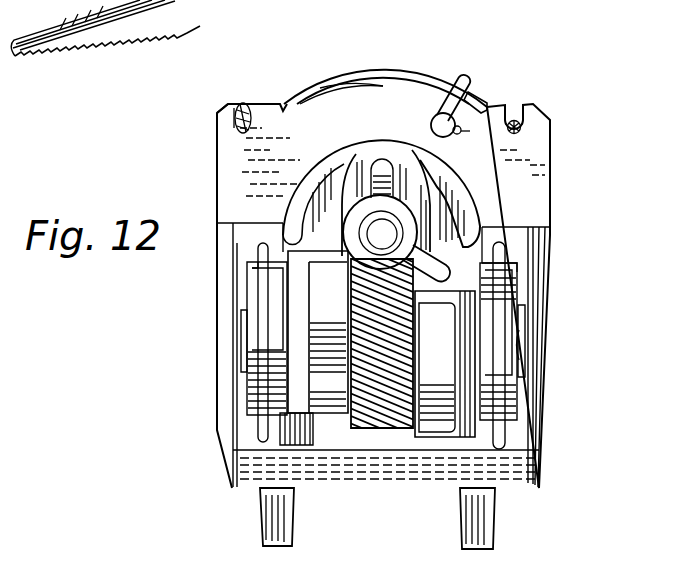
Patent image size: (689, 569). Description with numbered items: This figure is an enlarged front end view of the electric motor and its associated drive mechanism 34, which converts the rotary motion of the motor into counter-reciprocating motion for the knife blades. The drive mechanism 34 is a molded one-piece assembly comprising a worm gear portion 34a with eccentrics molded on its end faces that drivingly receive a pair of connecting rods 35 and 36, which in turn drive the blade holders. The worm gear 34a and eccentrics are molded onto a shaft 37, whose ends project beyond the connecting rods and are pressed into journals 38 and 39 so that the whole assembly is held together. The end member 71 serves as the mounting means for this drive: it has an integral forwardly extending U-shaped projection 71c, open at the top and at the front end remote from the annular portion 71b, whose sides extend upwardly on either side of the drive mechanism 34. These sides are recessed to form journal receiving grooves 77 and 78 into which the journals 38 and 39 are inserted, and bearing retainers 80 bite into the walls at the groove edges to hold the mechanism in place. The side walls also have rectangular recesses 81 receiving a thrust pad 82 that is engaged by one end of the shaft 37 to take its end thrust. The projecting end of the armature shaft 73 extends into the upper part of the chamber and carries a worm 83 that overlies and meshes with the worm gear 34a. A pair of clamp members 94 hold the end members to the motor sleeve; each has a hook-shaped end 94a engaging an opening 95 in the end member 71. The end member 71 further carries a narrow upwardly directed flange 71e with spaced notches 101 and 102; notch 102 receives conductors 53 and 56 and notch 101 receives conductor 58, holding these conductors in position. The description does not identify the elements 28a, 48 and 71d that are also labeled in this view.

The blade 28a is at (206, 28).
The housing 48 is at (240, 152).
The conductor 53 is at (243, 103).
The conductor 56 is at (236, 126).
The conductor 58 is at (524, 130).
The end member 71 is at (404, 74).
The annular portion 71b is at (303, 212).
The U-shaped projection 71c is at (528, 233).
The arm foot 71d is at (266, 502).
The flange 71e is at (226, 106).
The armature shaft 73 is at (374, 226).
The journal receiving groove 77 is at (254, 266).
The journal receiving groove 78 is at (511, 273).
The bearing retainer 80 is at (248, 392).
The rectangular recess 81 is at (246, 337).
The thrust pad 82 is at (523, 336).
The worm 83 is at (397, 221).
The clamp member 94 is at (453, 80).
The hook-shaped end 94a is at (486, 100).
The opening 95 is at (468, 130).
The notch 101 is at (515, 110).
The notch 102 is at (297, 98).
The drive mechanism 34 is at (258, 275).
The worm gear portion 34a is at (384, 430).
The connecting rod 35 is at (306, 385).
The connecting rod 36 is at (467, 407).
The shaft 37 is at (246, 358).
The journal 38 is at (300, 281).
The journal 39 is at (517, 277).